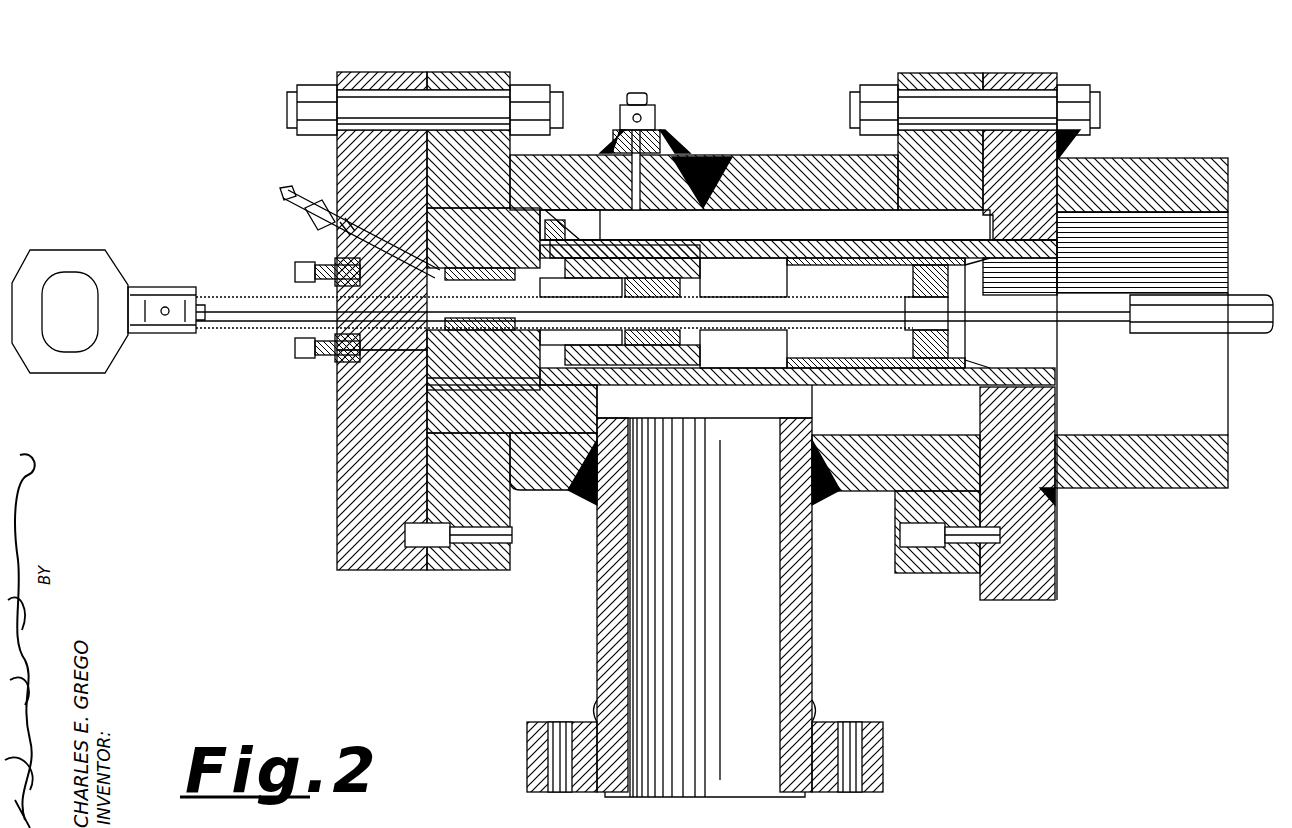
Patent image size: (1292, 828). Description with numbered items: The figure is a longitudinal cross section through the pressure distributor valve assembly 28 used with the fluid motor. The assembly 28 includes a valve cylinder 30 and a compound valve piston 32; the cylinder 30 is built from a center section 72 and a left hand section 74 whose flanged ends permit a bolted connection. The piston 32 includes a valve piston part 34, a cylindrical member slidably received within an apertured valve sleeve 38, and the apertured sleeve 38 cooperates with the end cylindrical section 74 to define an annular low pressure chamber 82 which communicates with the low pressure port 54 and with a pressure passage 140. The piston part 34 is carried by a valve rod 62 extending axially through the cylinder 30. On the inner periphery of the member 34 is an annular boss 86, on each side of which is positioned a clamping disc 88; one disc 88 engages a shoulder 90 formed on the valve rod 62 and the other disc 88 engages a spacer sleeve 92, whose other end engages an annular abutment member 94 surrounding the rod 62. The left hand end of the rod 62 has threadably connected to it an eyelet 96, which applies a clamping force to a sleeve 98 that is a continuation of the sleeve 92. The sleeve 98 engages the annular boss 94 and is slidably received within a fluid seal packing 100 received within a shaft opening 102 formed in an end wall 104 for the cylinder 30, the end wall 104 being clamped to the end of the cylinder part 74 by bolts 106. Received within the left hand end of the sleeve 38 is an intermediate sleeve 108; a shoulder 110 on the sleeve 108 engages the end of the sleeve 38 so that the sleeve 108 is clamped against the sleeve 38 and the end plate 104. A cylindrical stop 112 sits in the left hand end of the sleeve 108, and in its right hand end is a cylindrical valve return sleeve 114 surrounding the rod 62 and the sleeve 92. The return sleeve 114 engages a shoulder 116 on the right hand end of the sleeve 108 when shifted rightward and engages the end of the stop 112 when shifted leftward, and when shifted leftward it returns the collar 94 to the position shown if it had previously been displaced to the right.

The assembly 28 is at (1190, 156).
The valve cylinder 30 is at (1132, 172).
The compound valve piston 32 is at (1176, 302).
The valve piston part 34 is at (848, 247).
The apertured valve sleeve 38 is at (818, 248).
The low pressure port 54 is at (766, 552).
The valve rod 62 is at (236, 300).
The center section 72 is at (1112, 450).
The left hand section 74 is at (808, 167).
The annular low pressure chamber 82 is at (770, 220).
The annular boss 86 is at (903, 260).
The clamping disc 88 is at (916, 285).
The shoulder 90 is at (912, 340).
The spacer sleeve 92 is at (753, 296).
The annular abutment member 94 is at (523, 268).
The eyelet 96 is at (160, 290).
The sleeve 98 is at (270, 295).
The fluid seal packing 100 is at (348, 383).
The shaft opening 102 is at (300, 338).
The end wall 104 is at (355, 148).
The bolts 106 is at (400, 105).
The intermediate sleeve 108 is at (660, 265).
The shoulder 110 is at (598, 226).
The cylindrical stop 112 is at (477, 262).
The cylindrical valve return sleeve 114 is at (618, 287).
The shoulder 116 is at (682, 289).
The pressure passage 140 is at (290, 198).